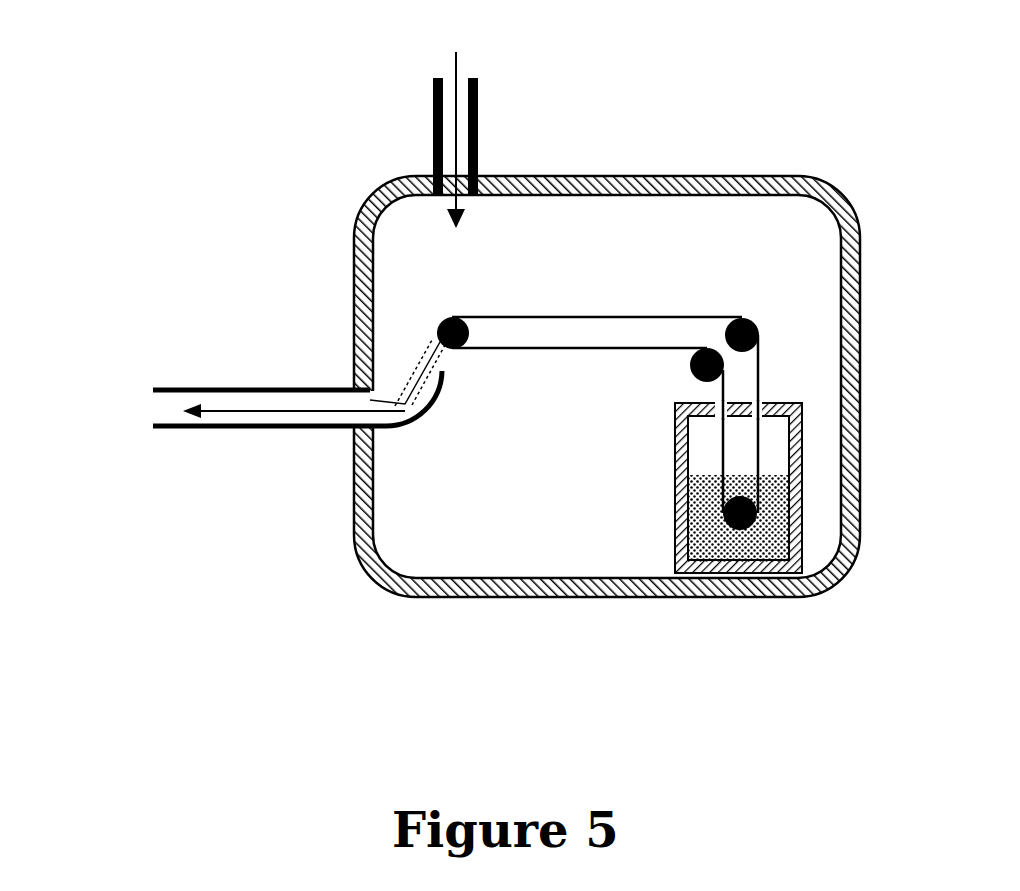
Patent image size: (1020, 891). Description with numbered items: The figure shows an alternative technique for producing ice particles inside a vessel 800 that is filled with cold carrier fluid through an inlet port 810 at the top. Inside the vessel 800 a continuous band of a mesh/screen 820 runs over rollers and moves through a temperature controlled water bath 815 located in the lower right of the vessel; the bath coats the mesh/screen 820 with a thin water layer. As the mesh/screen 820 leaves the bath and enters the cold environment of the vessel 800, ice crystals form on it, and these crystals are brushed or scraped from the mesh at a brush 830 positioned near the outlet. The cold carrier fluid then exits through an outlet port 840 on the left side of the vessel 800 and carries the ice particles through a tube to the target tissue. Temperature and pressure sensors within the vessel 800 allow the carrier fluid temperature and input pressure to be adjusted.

The vessel 800 is at (668, 175).
The port 810 is at (474, 117).
The temperature controlled water bath 815 is at (775, 537).
The mesh/screen 820 is at (592, 319).
The brush 830 is at (460, 349).
The port 840 is at (140, 421).